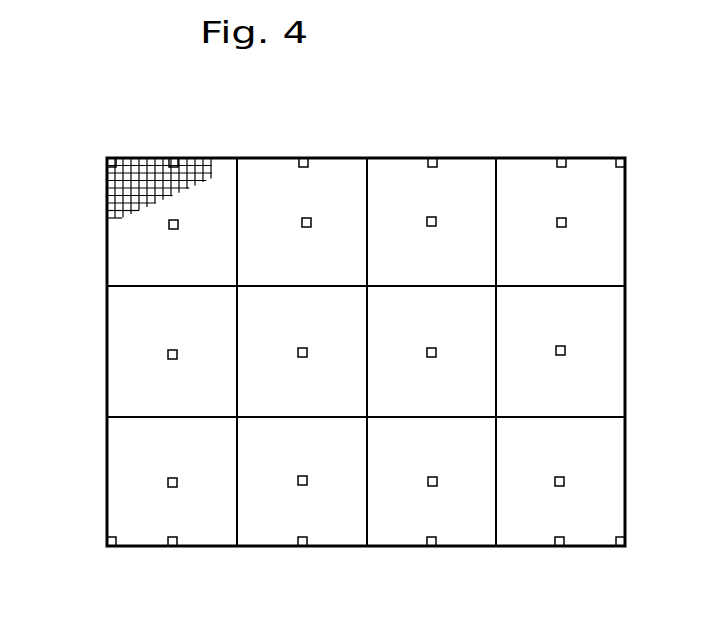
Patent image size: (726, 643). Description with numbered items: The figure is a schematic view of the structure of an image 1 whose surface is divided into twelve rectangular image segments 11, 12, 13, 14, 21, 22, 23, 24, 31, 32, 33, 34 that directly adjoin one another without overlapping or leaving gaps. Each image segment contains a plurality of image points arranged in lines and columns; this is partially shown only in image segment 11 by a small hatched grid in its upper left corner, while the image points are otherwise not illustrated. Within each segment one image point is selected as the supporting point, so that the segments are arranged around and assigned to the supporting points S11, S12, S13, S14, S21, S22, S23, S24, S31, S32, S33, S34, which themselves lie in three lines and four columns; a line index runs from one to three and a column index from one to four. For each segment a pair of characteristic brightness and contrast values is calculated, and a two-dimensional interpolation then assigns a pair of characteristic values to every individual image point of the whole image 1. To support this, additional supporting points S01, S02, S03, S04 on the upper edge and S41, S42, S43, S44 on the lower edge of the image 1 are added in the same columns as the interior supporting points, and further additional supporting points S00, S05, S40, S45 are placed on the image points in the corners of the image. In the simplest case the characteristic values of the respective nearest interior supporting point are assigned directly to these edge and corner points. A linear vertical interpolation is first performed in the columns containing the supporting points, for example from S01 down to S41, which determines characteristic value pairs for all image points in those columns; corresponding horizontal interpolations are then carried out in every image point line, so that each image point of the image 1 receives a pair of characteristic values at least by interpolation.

The image 1 is at (628, 298).
The image segment 11 is at (128, 266).
The image segment 12 is at (256, 158).
The image segment 13 is at (390, 170).
The image segment 14 is at (520, 168).
The image segment 21 is at (130, 356).
The image segment 22 is at (250, 385).
The image segment 23 is at (477, 380).
The image segment 24 is at (602, 360).
The image segment 31 is at (128, 490).
The image segment 32 is at (260, 518).
The image segment 33 is at (395, 522).
The image segment 34 is at (600, 502).
The additional supporting point S00 is at (113, 158).
The additional supporting point S01 is at (173, 158).
The additional supporting point S02 is at (305, 157).
The additional supporting point S03 is at (435, 157).
The additional supporting point S04 is at (562, 157).
The additional supporting point S05 is at (622, 157).
The supporting point S11 is at (168, 225).
The supporting point S12 is at (312, 244).
The supporting point S13 is at (433, 243).
The supporting point S14 is at (568, 245).
The supporting point S21 is at (176, 338).
The supporting point S22 is at (306, 336).
The supporting point S23 is at (434, 336).
The supporting point S24 is at (559, 333).
The supporting point S31 is at (175, 468).
The supporting point S32 is at (307, 467).
The supporting point S33 is at (431, 465).
The supporting point S34 is at (559, 464).
The additional supporting point S40 is at (107, 545).
The additional supporting point S41 is at (170, 548).
The additional supporting point S42 is at (303, 549).
The additional supporting point S43 is at (432, 548).
The additional supporting point S44 is at (559, 548).
The additional supporting point S45 is at (620, 548).